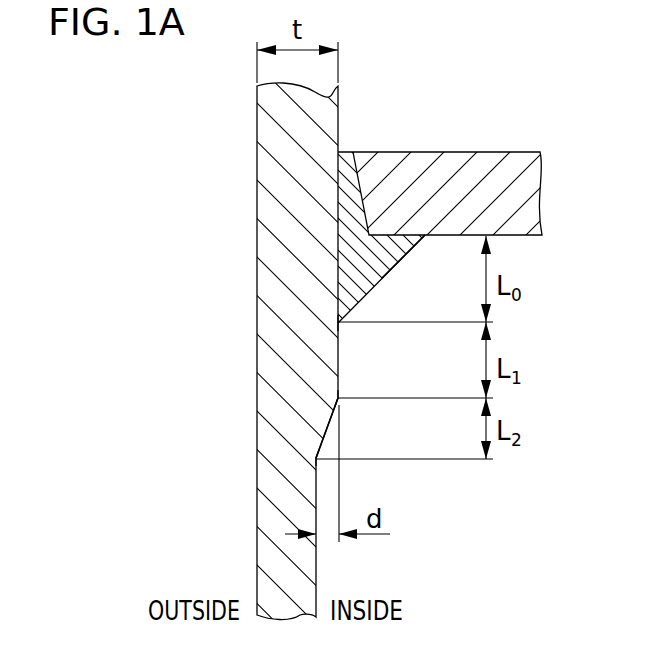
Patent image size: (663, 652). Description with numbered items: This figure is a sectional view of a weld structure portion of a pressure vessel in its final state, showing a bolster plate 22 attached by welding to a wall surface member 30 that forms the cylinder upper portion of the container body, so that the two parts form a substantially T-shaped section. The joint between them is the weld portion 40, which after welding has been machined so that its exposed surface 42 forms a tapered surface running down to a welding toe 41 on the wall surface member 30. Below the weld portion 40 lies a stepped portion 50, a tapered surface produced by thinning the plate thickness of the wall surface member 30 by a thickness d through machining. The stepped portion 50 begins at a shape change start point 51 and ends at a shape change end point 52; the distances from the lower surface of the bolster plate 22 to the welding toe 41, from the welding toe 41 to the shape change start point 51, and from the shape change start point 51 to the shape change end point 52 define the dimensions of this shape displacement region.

The bolster plate 22 is at (465, 152).
The wall surface member 30 is at (257, 297).
The weld portion 40 is at (358, 288).
The welding toe 41 is at (342, 323).
The exposed surface 42 is at (392, 266).
The stepped portion 50 is at (328, 427).
The shape change start point 51 is at (342, 398).
The shape change end point 52 is at (318, 462).